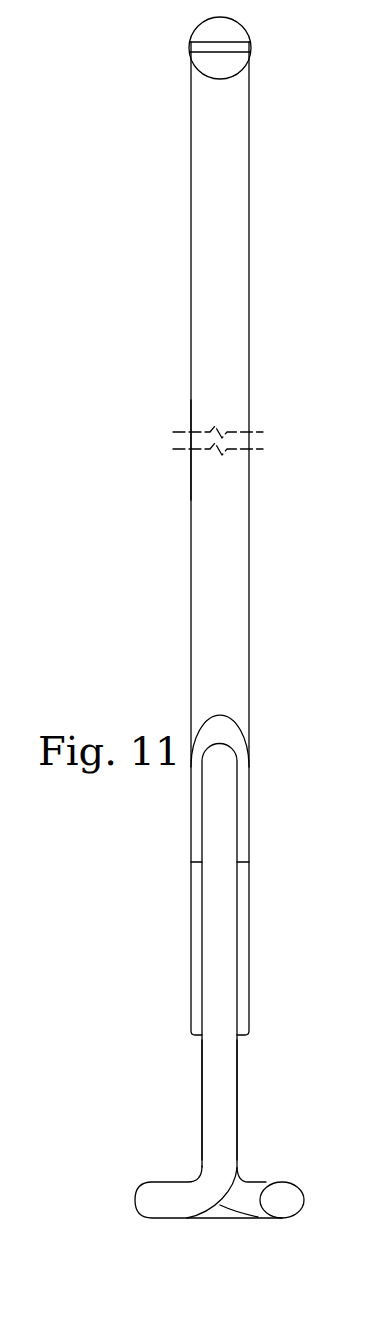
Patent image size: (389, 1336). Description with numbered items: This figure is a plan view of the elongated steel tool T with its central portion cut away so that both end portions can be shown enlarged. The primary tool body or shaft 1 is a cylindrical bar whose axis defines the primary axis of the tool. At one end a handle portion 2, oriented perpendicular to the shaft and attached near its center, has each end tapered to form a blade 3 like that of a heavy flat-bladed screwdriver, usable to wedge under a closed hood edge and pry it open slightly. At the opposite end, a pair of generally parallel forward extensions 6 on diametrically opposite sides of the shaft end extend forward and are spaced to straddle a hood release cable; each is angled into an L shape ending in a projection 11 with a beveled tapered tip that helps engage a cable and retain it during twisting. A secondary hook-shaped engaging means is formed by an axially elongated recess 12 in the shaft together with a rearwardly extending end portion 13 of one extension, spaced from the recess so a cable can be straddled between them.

The shaft 1 is at (240, 402).
The handle portion 2 is at (196, 25).
The blade 3 is at (237, 32).
The tool T is at (183, 483).
The forward extension 6 is at (220, 1105).
The projection 11 is at (178, 1204).
The recess 12 is at (240, 797).
The rearwardly extending end portion 13 is at (222, 835).